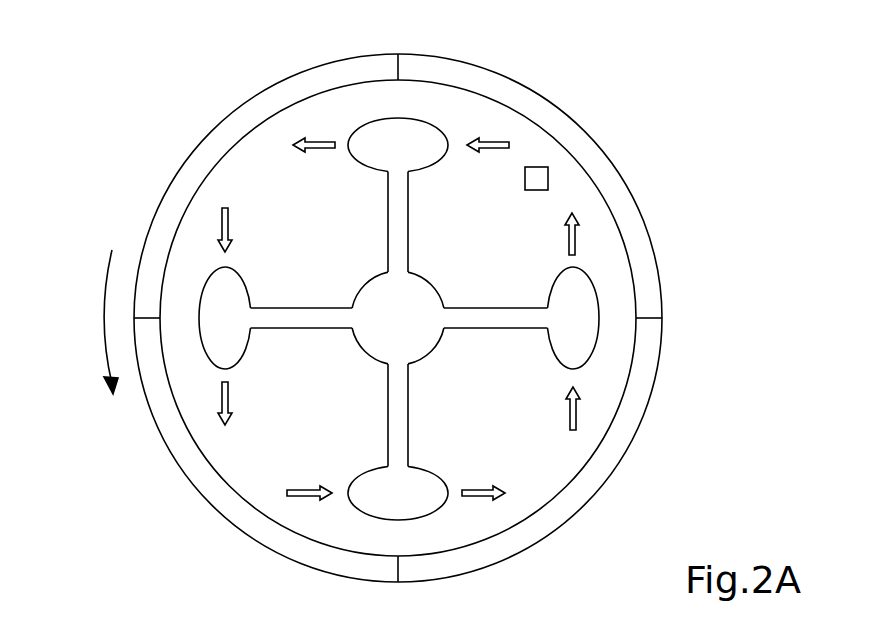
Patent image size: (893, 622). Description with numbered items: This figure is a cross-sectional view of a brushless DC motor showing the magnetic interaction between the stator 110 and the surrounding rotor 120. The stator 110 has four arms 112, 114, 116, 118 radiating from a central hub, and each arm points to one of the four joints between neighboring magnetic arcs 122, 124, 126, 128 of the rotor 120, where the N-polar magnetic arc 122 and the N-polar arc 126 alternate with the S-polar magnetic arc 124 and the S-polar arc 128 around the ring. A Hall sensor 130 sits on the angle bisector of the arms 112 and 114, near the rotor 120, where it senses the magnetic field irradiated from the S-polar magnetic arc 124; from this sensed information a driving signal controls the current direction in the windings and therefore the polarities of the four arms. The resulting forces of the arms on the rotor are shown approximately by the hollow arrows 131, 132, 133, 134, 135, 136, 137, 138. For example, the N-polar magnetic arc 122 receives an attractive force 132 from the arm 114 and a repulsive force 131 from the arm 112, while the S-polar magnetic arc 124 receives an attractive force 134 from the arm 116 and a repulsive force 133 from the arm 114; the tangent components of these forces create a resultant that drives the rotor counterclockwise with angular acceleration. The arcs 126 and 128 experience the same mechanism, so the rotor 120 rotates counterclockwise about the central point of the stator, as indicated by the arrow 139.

The stator 110 is at (382, 329).
The arm 112 is at (388, 247).
The arm 114 is at (327, 328).
The arm 116 is at (408, 385).
The arm 118 is at (470, 308).
The rotor 120 is at (398, 55).
The N-polar magnetic arc 122 is at (197, 155).
The S-polar magnetic arc 124 is at (233, 517).
The N-polar magnetic arc 126 is at (598, 482).
The S-polar magnetic arc 128 is at (562, 120).
The Hall sensor 130 is at (540, 178).
The repulsive force 131 is at (319, 148).
The attractive force 132 is at (229, 223).
The repulsive force 133 is at (229, 397).
The attractive force 134 is at (303, 490).
The hollow arrow 135 is at (476, 490).
The hollow arrow 136 is at (570, 414).
The hollow arrow 137 is at (569, 241).
The hollow arrow 138 is at (493, 148).
The arrow 139 is at (106, 322).